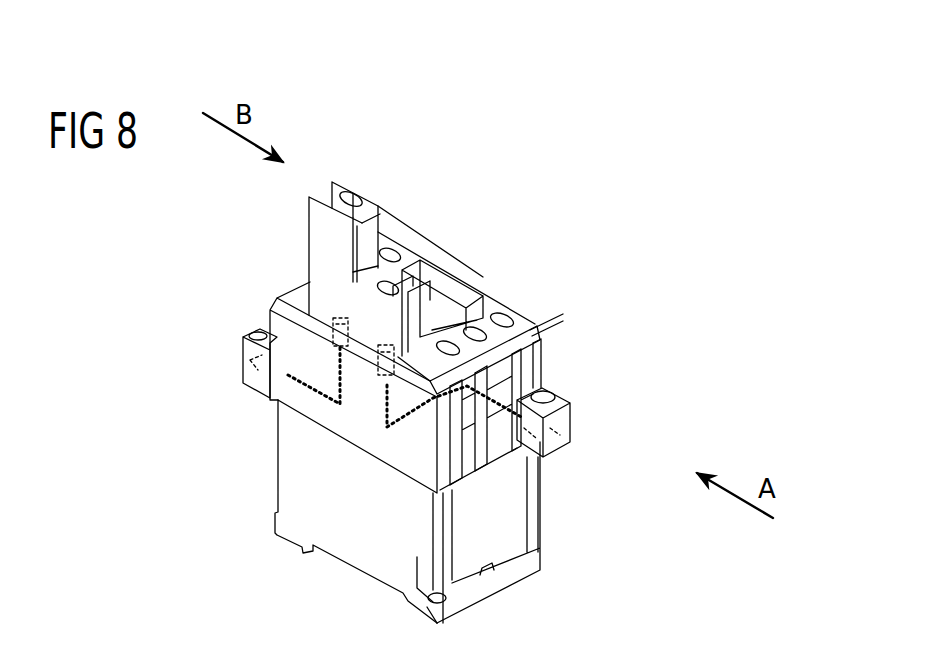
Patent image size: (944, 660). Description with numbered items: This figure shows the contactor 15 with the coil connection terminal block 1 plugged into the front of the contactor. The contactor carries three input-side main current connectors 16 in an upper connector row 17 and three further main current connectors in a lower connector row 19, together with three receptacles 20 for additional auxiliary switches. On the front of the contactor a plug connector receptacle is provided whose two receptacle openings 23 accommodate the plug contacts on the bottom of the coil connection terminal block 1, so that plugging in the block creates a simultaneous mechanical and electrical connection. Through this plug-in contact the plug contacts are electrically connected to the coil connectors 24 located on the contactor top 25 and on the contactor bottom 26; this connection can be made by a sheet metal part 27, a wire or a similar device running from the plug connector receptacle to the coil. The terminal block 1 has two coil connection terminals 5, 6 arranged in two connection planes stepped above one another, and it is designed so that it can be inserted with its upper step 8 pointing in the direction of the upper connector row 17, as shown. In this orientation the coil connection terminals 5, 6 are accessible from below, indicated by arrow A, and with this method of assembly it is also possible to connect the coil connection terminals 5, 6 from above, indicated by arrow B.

The coil connection terminal block 1 is at (327, 225).
The coil connection terminal 5 is at (420, 332).
The coil connection terminal 6 is at (368, 228).
The upper step 8 is at (346, 188).
The contactor 15 is at (574, 205).
The input-side main current connectors 16 is at (562, 317).
The upper connector row 17 is at (300, 296).
The lower connector row 19 is at (437, 369).
The receptacles for additional auxiliary switches 20 is at (447, 283).
The receptacle openings 23 is at (390, 347).
The coil connectors 24 is at (560, 437).
The contactor top 25 is at (275, 452).
The contactor bottom 26 is at (497, 503).
The sheet metal part 27 is at (340, 378).